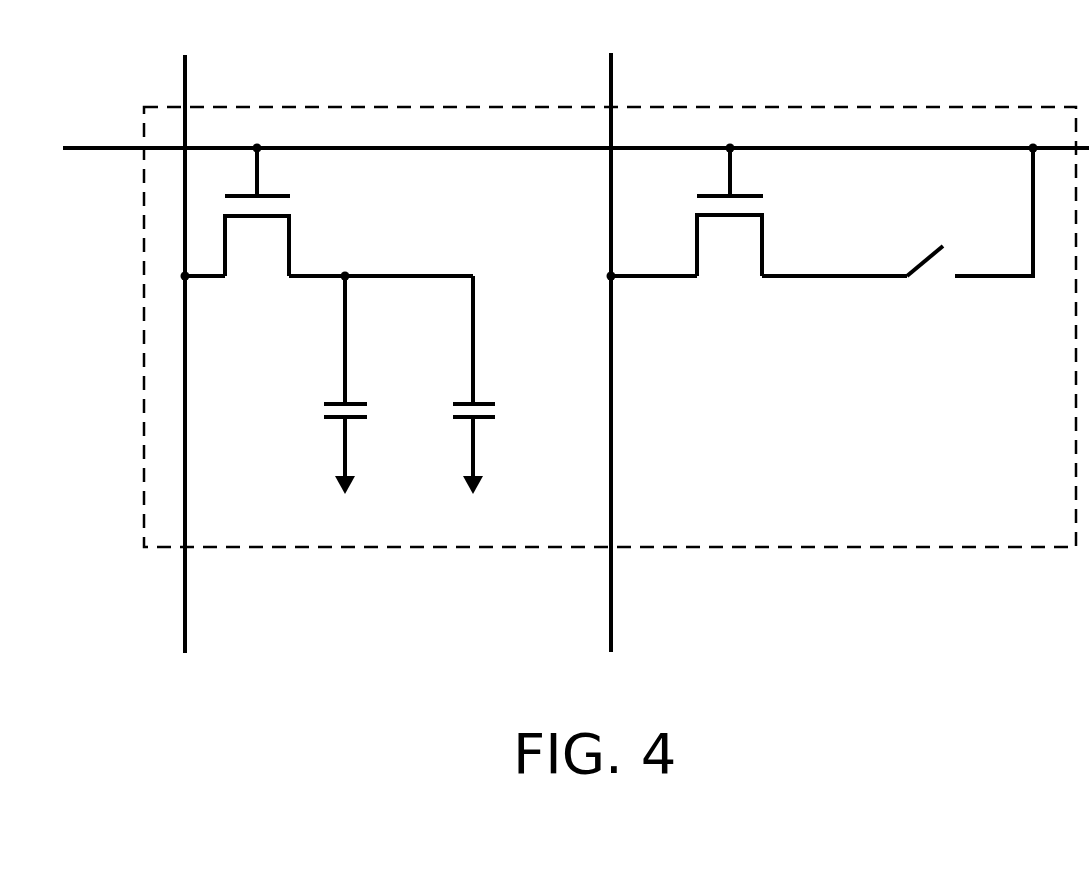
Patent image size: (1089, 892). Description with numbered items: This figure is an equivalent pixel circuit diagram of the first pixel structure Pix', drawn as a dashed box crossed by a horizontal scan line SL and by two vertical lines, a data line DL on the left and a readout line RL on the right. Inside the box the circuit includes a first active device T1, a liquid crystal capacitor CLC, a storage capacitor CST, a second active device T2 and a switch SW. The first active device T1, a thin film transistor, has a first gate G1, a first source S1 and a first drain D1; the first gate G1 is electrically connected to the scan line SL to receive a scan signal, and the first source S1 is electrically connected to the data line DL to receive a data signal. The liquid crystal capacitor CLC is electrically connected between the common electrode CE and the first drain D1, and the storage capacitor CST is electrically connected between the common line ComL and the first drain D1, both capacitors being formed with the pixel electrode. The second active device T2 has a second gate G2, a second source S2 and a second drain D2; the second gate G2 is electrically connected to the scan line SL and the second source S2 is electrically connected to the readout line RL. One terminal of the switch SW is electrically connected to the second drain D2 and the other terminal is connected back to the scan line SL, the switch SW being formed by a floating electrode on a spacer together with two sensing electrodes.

The first pixel structure Pix' is at (610, 298).
The data line DL is at (186, 603).
The readout line RL is at (612, 603).
The scan line SL is at (814, 140).
The first gate G1 is at (259, 173).
The first active device T1 is at (258, 229).
The first source S1 is at (210, 279).
The first drain D1 is at (307, 279).
The liquid crystal capacitor CLC is at (373, 378).
The common electrode CE is at (342, 507).
The storage capacitor CST is at (447, 378).
The common line ComL is at (471, 507).
The second gate G2 is at (728, 177).
The second active device T2 is at (725, 243).
The second source S2 is at (660, 279).
The second drain D2 is at (802, 279).
The switch SW is at (930, 275).